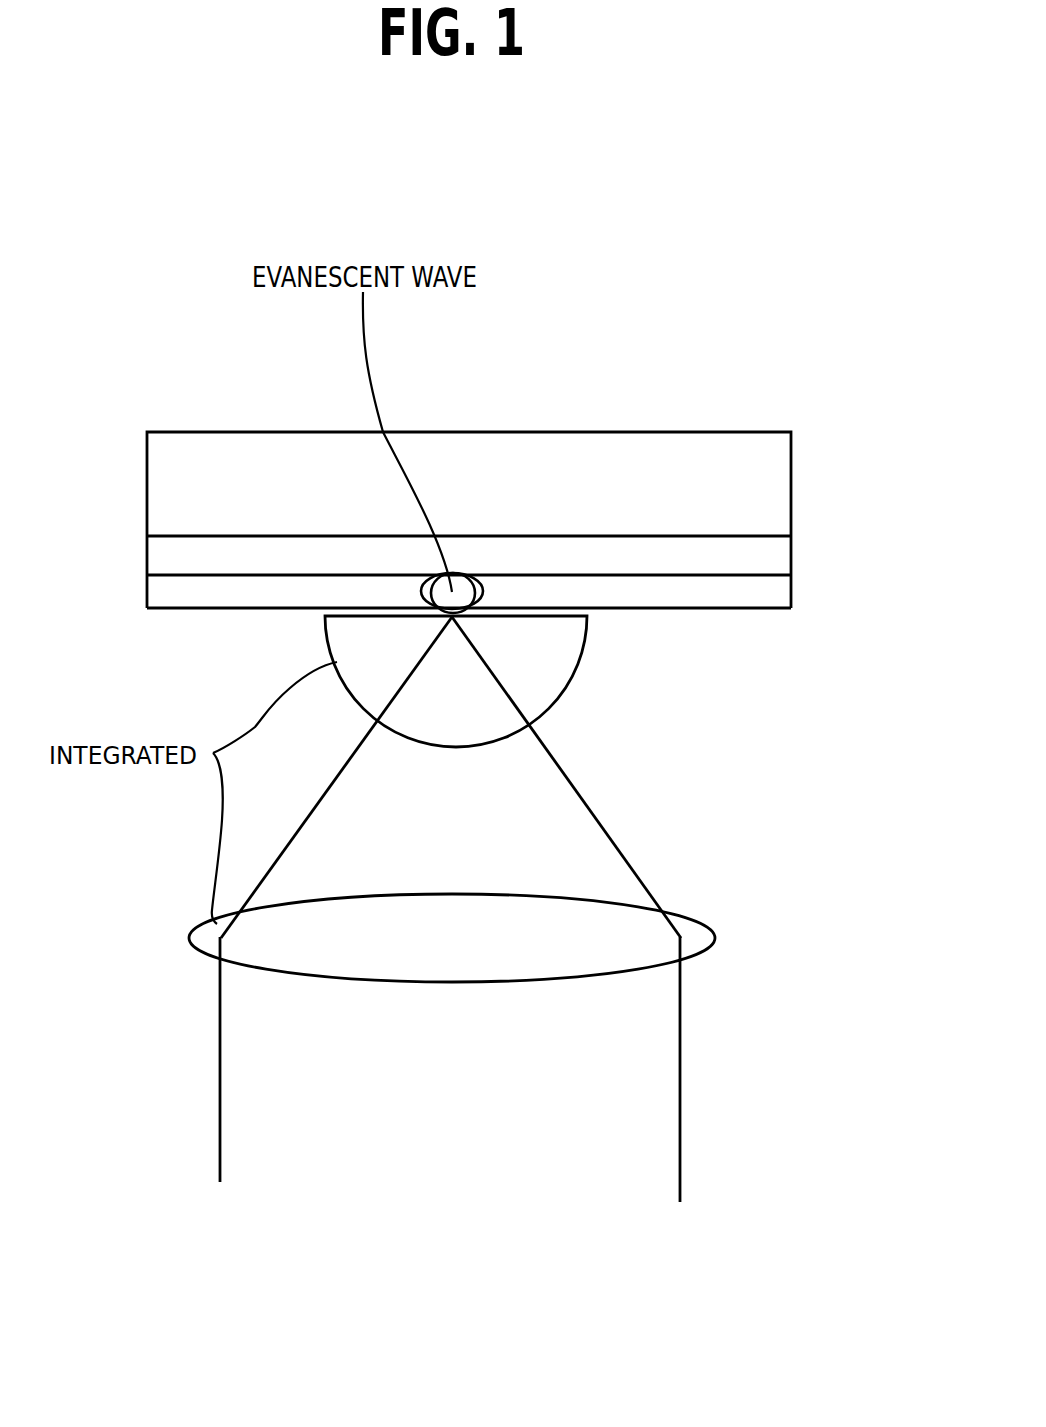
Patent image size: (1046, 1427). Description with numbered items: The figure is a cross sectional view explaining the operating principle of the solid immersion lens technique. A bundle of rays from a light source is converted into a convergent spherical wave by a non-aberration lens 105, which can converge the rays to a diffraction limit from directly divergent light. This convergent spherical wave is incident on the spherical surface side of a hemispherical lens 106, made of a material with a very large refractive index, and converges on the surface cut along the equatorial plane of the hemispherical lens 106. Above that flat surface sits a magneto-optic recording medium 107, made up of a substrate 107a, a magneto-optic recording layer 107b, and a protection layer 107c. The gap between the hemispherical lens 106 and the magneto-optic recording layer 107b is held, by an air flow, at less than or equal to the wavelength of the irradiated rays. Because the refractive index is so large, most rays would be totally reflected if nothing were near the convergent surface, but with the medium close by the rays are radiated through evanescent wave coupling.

The non-aberration lens 105 is at (647, 925).
The hemispherical lens 106 is at (543, 681).
The magneto-optic recording medium 107 is at (147, 493).
The substrate 107a is at (677, 443).
The magneto-optic recording layer 107b is at (780, 567).
The protection layer 107c is at (192, 590).